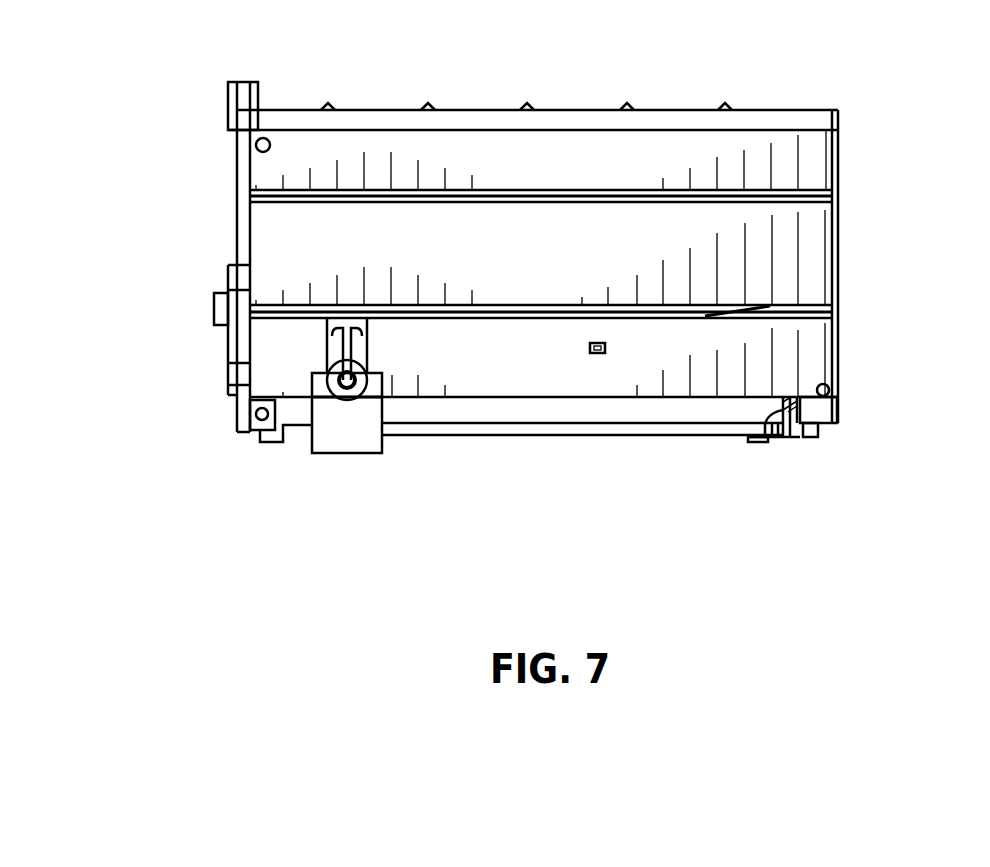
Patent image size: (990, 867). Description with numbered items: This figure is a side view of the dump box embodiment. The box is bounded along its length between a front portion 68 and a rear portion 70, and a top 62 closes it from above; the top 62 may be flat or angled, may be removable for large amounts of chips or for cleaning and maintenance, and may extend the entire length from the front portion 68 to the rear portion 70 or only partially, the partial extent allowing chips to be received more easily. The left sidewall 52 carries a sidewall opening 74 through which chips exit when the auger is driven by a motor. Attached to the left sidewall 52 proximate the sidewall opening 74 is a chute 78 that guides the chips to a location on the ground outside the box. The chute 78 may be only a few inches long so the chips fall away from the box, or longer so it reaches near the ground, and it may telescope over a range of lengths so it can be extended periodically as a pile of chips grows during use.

The rear portion 70 is at (172, 196).
The top 62 is at (737, 118).
The left sidewall 52 is at (830, 160).
The front portion 68 is at (910, 318).
The sidewall opening 74 is at (337, 378).
The chute 78 is at (340, 443).